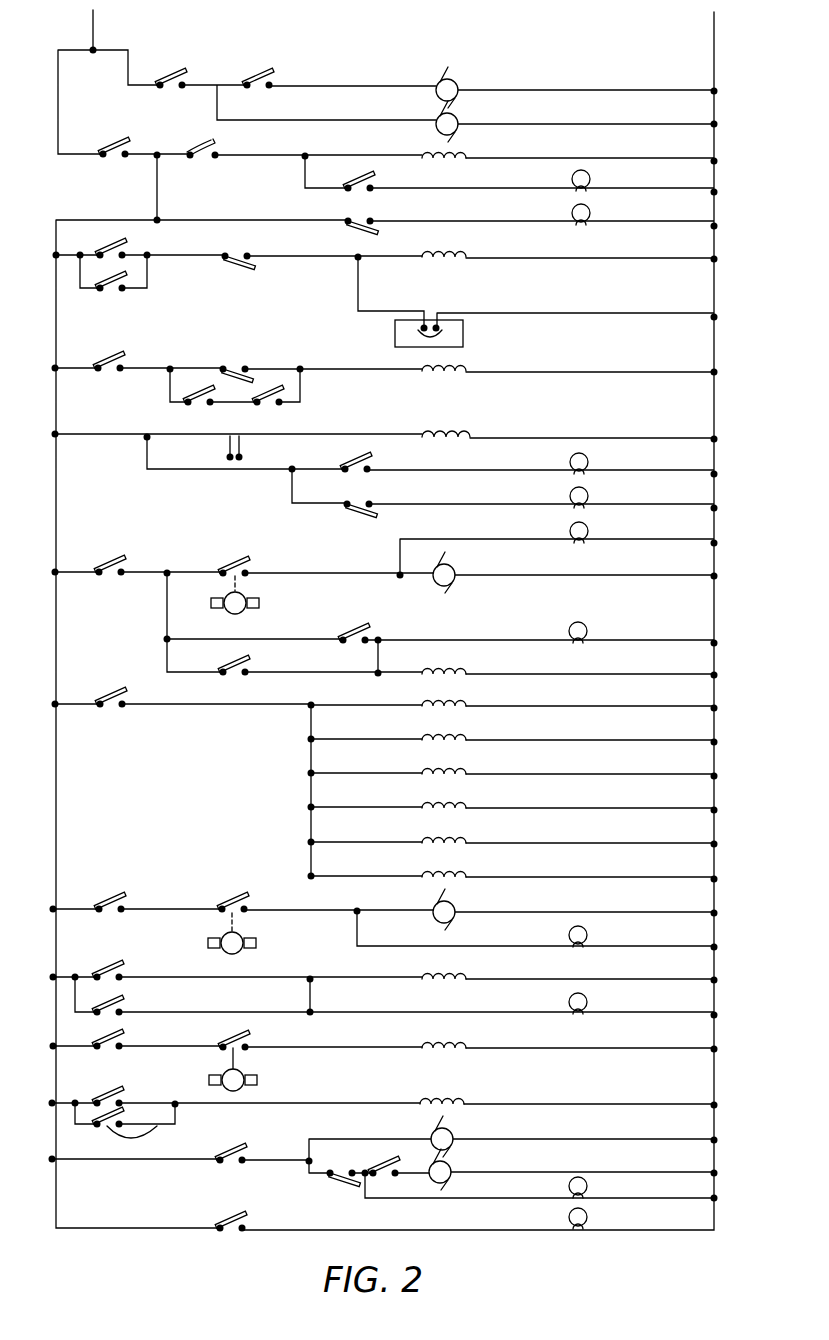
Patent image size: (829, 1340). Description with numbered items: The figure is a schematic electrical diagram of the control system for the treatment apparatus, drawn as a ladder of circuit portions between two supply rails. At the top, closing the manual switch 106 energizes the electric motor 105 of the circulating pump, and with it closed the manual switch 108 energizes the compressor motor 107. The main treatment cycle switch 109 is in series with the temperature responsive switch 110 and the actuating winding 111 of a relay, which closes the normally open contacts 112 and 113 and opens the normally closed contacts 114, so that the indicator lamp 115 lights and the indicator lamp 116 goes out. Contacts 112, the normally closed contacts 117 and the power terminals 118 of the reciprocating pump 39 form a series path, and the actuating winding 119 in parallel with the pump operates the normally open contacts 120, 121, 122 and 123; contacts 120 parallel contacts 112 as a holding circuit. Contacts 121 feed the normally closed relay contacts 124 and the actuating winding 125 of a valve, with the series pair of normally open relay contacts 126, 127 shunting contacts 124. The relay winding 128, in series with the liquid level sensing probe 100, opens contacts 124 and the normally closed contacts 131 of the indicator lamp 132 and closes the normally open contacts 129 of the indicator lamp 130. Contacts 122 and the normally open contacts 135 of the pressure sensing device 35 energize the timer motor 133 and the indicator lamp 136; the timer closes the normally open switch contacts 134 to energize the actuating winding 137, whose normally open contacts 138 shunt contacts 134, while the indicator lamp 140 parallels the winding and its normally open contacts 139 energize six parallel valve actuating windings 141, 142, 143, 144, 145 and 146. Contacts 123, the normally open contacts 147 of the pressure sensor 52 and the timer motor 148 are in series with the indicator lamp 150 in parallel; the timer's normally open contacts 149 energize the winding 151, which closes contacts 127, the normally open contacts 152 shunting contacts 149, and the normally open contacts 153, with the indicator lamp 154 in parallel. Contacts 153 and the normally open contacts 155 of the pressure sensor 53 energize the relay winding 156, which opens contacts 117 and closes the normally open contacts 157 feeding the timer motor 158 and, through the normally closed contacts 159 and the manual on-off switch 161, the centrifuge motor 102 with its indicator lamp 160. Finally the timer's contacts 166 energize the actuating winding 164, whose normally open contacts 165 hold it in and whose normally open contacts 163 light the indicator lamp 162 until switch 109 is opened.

The pressure sensing device 35 is at (258, 588).
The reciprocating pump 39 is at (395, 343).
The pressure sensor 52 is at (245, 932).
The pressure sensor 53 is at (247, 1072).
The liquid level sensing probe 100 is at (252, 452).
The centrifuge motor 102 is at (455, 1167).
The electric motor 105 is at (450, 122).
The manual switch 106 is at (182, 79).
The compressor motor 107 is at (450, 78).
The manual switch 108 is at (270, 79).
The main treatment cycle switch 109 is at (108, 138).
The temperature responsive switch 110 is at (210, 140).
The actuating winding 111 is at (466, 148).
The normally open contacts 112 is at (127, 236).
The normally open contacts 113 is at (379, 171).
The normally closed contacts 114 is at (368, 216).
The indicator lamp 115 is at (592, 177).
The indicator lamp 116 is at (584, 211).
The normally closed contacts 117 is at (244, 246).
The power terminals 118 is at (437, 327).
The actuating winding 119 is at (469, 248).
The normally open contacts 120 is at (140, 293).
The normally open contacts 121 is at (108, 354).
The normally open contacts 122 is at (109, 557).
The normally open contacts 123 is at (107, 894).
The normally closed relay contacts 124 is at (238, 360).
The actuating winding 125 is at (469, 362).
The normally open relay contacts 126 is at (204, 408).
The normally open relay contacts 127 is at (276, 411).
The relay winding 128 is at (453, 442).
The normally open contacts 129 is at (352, 460).
The indicator lamp 130 is at (594, 460).
The normally closed contacts 131 is at (370, 500).
The indicator lamp 132 is at (590, 494).
The motor 133 is at (454, 566).
The normally open switch contacts 134 is at (373, 626).
The normally open contacts 135 is at (226, 557).
The indicator lamp 136 is at (595, 528).
The actuating winding 137 is at (456, 666).
The normally open contacts 138 is at (252, 661).
The normally open contacts 139 is at (125, 696).
The indicator lamp 140 is at (587, 621).
The actuating winding 141 is at (463, 696).
The actuating winding 142 is at (463, 731).
The actuating winding 143 is at (463, 765).
The actuating winding 144 is at (463, 799).
The actuating winding 145 is at (463, 834).
The actuating winding 146 is at (463, 868).
The normally open contacts 147 is at (233, 894).
The motor 148 is at (456, 903).
The normally open contacts 149 is at (125, 964).
The indicator lamp 150 is at (586, 930).
The winding 151 is at (465, 969).
The normally open contacts 152 is at (126, 1001).
The normally open contacts 153 is at (119, 1034).
The indicator lamp 154 is at (589, 998).
The normally open contacts 155 is at (243, 1034).
The relay winding 156 is at (463, 1038).
The normally open contacts 157 is at (245, 1144).
The motor 158 is at (452, 1130).
The normally closed contacts 159 is at (346, 1171).
The indicator lamp 160 is at (586, 1190).
The manual on-off switch 161 is at (382, 1158).
The indicator lamp 162 is at (588, 1219).
The normally open contacts 163 is at (235, 1213).
The actuating winding 164 is at (463, 1094).
The normally open contacts 165 is at (157, 1114).
The contacts 166 is at (121, 1090).